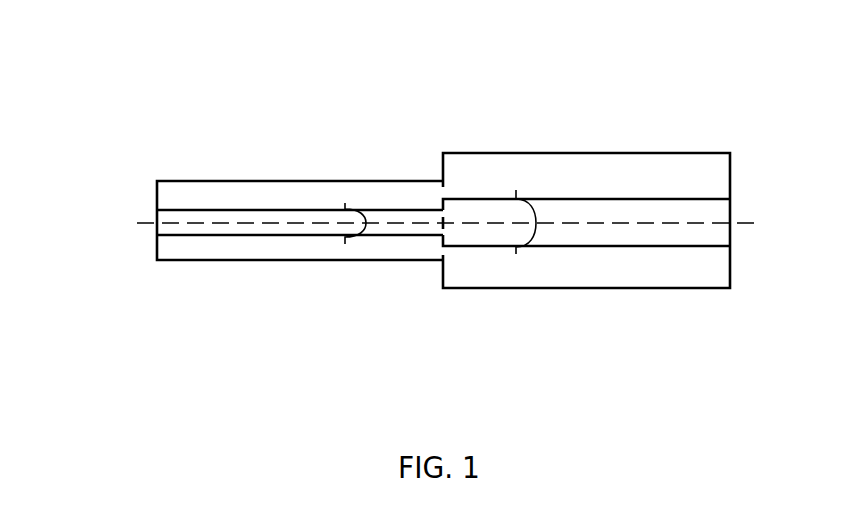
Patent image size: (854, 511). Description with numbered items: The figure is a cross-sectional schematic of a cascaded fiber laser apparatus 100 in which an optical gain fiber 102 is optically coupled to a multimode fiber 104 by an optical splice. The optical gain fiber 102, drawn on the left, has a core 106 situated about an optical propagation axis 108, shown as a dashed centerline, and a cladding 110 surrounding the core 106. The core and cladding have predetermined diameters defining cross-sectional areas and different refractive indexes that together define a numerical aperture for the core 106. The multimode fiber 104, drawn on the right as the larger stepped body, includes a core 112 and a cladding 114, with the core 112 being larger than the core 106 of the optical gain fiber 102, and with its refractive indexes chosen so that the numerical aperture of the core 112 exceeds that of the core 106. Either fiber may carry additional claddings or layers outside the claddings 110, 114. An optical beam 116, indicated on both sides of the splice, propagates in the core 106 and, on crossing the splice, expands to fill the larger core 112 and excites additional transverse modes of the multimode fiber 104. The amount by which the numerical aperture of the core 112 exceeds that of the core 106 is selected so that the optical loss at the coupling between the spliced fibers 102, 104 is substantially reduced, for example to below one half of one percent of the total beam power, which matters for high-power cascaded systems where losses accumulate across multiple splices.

The cascaded fiber laser apparatus 100 is at (196, 82).
The optical gain fiber 102 is at (223, 262).
The multimode fiber 104 is at (632, 288).
The core 106 is at (298, 210).
The optical propagation axis 108 is at (145, 221).
The cladding 110 is at (215, 192).
The core 112 is at (612, 210).
The cladding 114 is at (692, 167).
The optical beam 116 is at (364, 230).